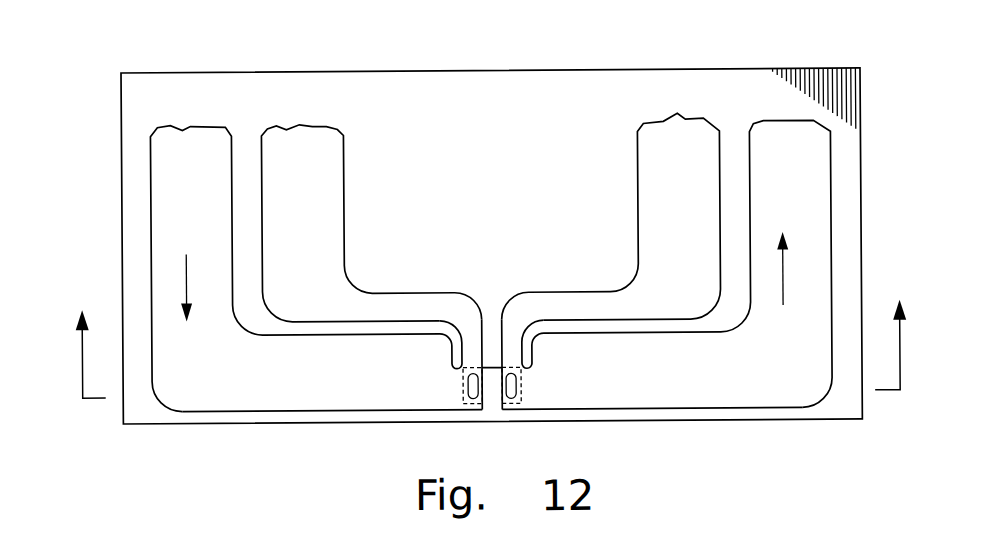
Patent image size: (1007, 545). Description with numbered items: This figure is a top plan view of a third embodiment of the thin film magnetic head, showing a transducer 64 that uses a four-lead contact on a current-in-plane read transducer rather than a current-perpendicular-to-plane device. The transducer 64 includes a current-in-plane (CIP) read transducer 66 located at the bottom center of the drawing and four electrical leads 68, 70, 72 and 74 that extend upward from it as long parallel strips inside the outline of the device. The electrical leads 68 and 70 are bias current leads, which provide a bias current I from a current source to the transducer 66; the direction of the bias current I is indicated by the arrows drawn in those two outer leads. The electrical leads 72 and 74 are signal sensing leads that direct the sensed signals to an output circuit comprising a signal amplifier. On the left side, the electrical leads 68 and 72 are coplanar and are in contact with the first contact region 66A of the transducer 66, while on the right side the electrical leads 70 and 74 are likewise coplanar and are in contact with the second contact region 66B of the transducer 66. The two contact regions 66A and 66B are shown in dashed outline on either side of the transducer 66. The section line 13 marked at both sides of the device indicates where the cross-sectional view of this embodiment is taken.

The transducer 64 is at (84, 67).
The current-in-plane (CIP) read transducer 66 is at (490, 414).
The first contact region 66A is at (461, 389).
The second contact region 66B is at (518, 394).
The electrical lead 68 is at (176, 203).
The electrical lead 70 is at (774, 203).
The electrical lead 72 is at (287, 203).
The electrical lead 74 is at (663, 203).
The section line 13- 13 is at (492, 330).
The bias current I is at (185, 282).